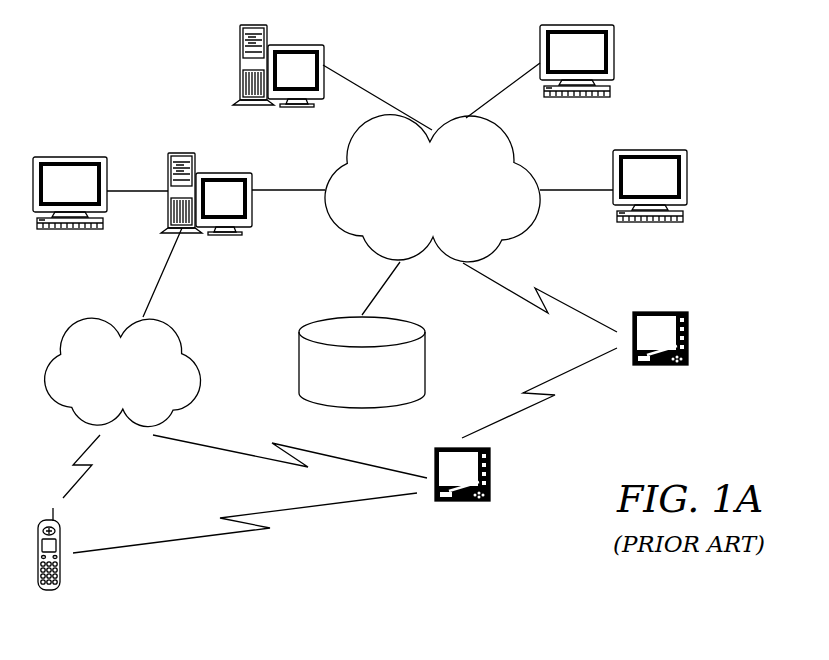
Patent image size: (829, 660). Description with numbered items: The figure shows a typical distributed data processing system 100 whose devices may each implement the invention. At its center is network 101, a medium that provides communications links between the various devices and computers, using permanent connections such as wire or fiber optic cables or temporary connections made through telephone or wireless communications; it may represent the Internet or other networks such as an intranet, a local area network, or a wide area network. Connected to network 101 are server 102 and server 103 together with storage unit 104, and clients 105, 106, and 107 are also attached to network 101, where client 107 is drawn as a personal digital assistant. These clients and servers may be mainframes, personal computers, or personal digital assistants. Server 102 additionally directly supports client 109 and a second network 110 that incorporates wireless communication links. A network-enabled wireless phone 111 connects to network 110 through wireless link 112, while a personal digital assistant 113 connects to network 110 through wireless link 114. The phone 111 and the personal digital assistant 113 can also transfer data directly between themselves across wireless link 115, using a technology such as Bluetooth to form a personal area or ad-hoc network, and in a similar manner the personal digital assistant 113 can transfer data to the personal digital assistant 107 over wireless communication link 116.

The distributed data processing system 100 is at (101, 82).
The network 101 is at (448, 212).
The server 102 is at (181, 153).
The server 103 is at (240, 67).
The storage unit 104 is at (298, 362).
The client 105 is at (614, 57).
The client 106 is at (688, 183).
The personal digital assistant 107 is at (690, 335).
The client 109 is at (69, 157).
The network 110 is at (138, 396).
The network-enabled phone 111 is at (61, 568).
The wireless link 112 is at (80, 485).
The personal digital assistant 113 is at (492, 470).
The wireless link 114 is at (204, 442).
The wireless link 115 is at (182, 537).
The wireless communication link 116 is at (512, 412).